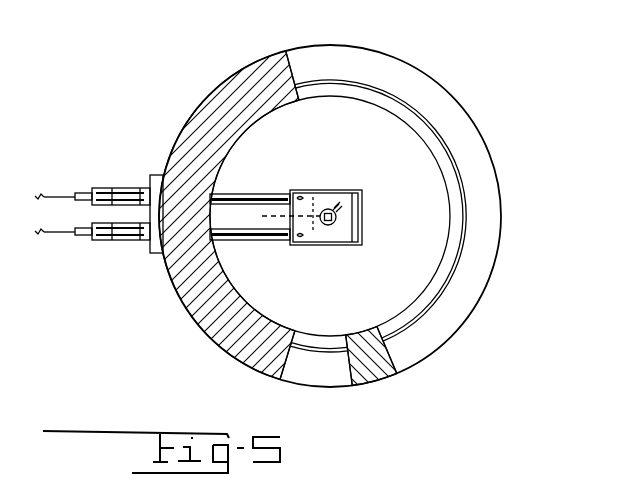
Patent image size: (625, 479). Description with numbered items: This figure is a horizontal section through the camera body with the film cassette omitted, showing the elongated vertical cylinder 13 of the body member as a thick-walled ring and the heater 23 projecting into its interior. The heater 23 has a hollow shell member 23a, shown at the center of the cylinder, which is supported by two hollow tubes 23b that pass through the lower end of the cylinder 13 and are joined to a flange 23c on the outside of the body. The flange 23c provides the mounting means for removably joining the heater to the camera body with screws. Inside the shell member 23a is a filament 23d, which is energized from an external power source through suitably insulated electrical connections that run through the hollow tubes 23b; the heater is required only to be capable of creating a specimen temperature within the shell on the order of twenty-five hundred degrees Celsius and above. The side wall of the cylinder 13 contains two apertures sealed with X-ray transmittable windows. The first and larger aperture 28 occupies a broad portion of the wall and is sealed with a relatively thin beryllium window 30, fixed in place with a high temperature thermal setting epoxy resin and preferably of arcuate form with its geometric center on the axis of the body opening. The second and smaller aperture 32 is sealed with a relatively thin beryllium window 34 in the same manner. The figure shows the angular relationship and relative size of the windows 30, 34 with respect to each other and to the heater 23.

The elongated vertical cylinder 13 is at (240, 74).
The aperture 28 is at (437, 101).
The beryllium window 30 is at (460, 183).
The aperture 32 is at (338, 383).
The beryllium window 34 is at (310, 355).
The heater 23 is at (317, 187).
The hollow shell member 23a is at (345, 189).
The hollow tubes 23b is at (250, 193).
The flange 23c is at (153, 248).
The filament 23d is at (271, 217).